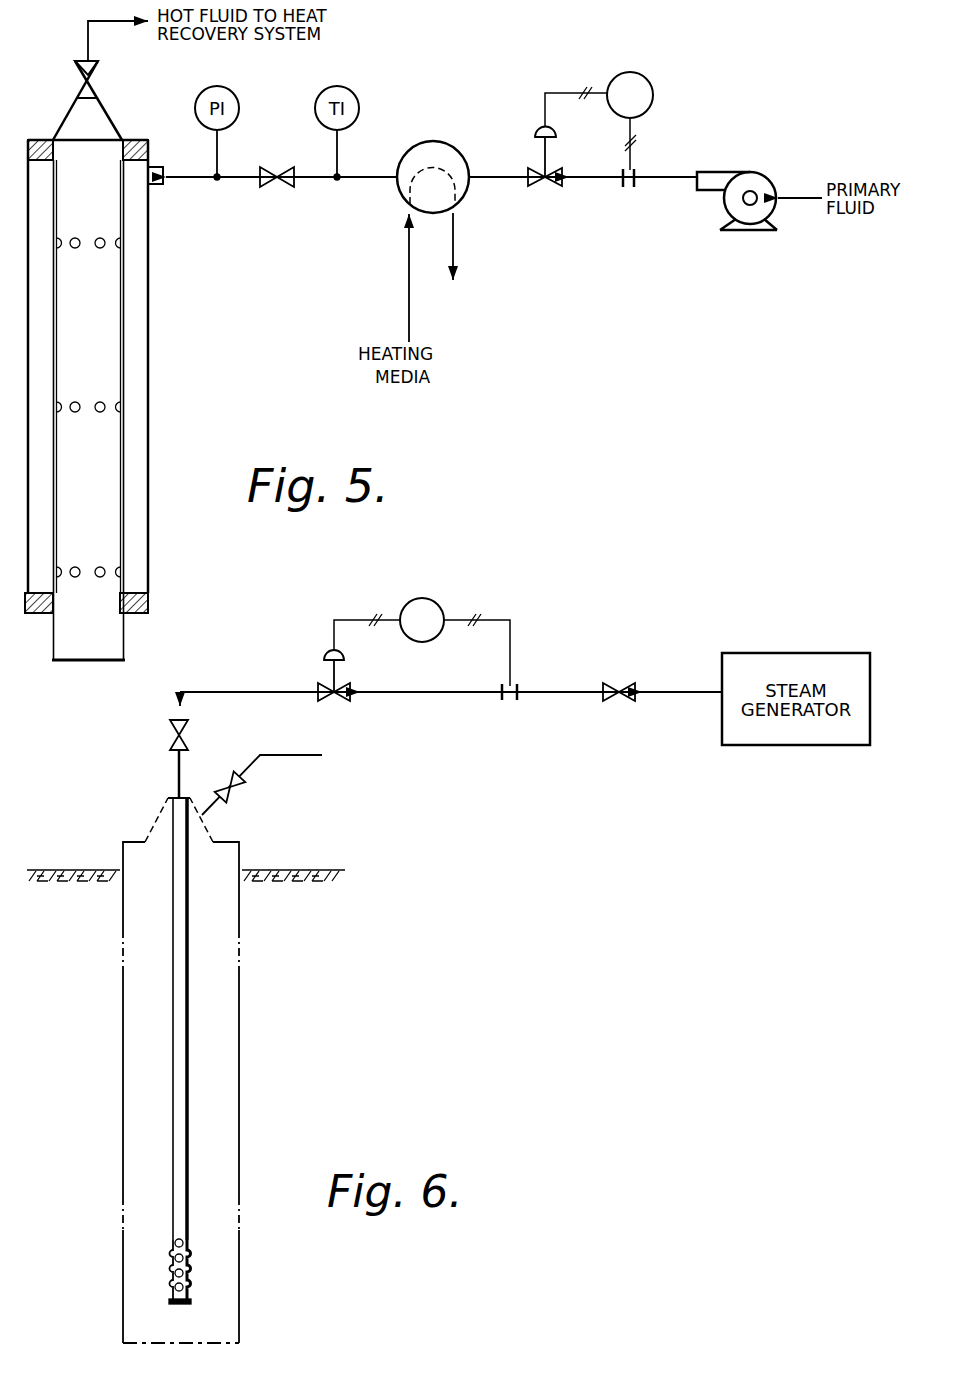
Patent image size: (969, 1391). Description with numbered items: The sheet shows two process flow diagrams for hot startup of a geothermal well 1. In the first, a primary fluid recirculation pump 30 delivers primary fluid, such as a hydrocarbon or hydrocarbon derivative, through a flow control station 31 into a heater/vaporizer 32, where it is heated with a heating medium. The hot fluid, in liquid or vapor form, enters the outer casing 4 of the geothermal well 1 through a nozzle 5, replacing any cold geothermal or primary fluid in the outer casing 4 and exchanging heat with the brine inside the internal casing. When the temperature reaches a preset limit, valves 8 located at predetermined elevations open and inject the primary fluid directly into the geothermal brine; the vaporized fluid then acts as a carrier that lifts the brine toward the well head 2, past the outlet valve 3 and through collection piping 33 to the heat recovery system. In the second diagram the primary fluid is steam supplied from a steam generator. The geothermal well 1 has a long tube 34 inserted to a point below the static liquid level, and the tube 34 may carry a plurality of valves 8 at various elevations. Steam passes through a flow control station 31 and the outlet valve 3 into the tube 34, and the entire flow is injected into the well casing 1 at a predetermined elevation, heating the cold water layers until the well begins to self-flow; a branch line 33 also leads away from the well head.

In FIG. 6, the geothermal well 1 is at (239, 1115).
In FIG. 5, the well head 2 is at (110, 118).
In FIG. 5, the outlet valve 3 is at (99, 87).
In FIG. 6, the outlet valve 3 is at (170, 745).
In FIG. 5, the outer casing 4 is at (148, 360).
In FIG. 5, the nozzle 5 is at (151, 186).
In FIG. 5, the valves 8 is at (121, 407).
In FIG. 6, the valves 8 is at (188, 1297).
In FIG. 5, the primary fluid recirculation pump 30 is at (753, 172).
In FIG. 5, the flow control station 31 is at (537, 128).
In FIG. 6, the flow control station 31 is at (330, 700).
In FIG. 5, the heater/vaporizer 32 is at (398, 190).
In FIG. 5, the collection piping 33 is at (88, 48).
In FIG. 6, the collection piping 33 is at (288, 757).
In FIG. 6, the long tube 34 is at (188, 1003).